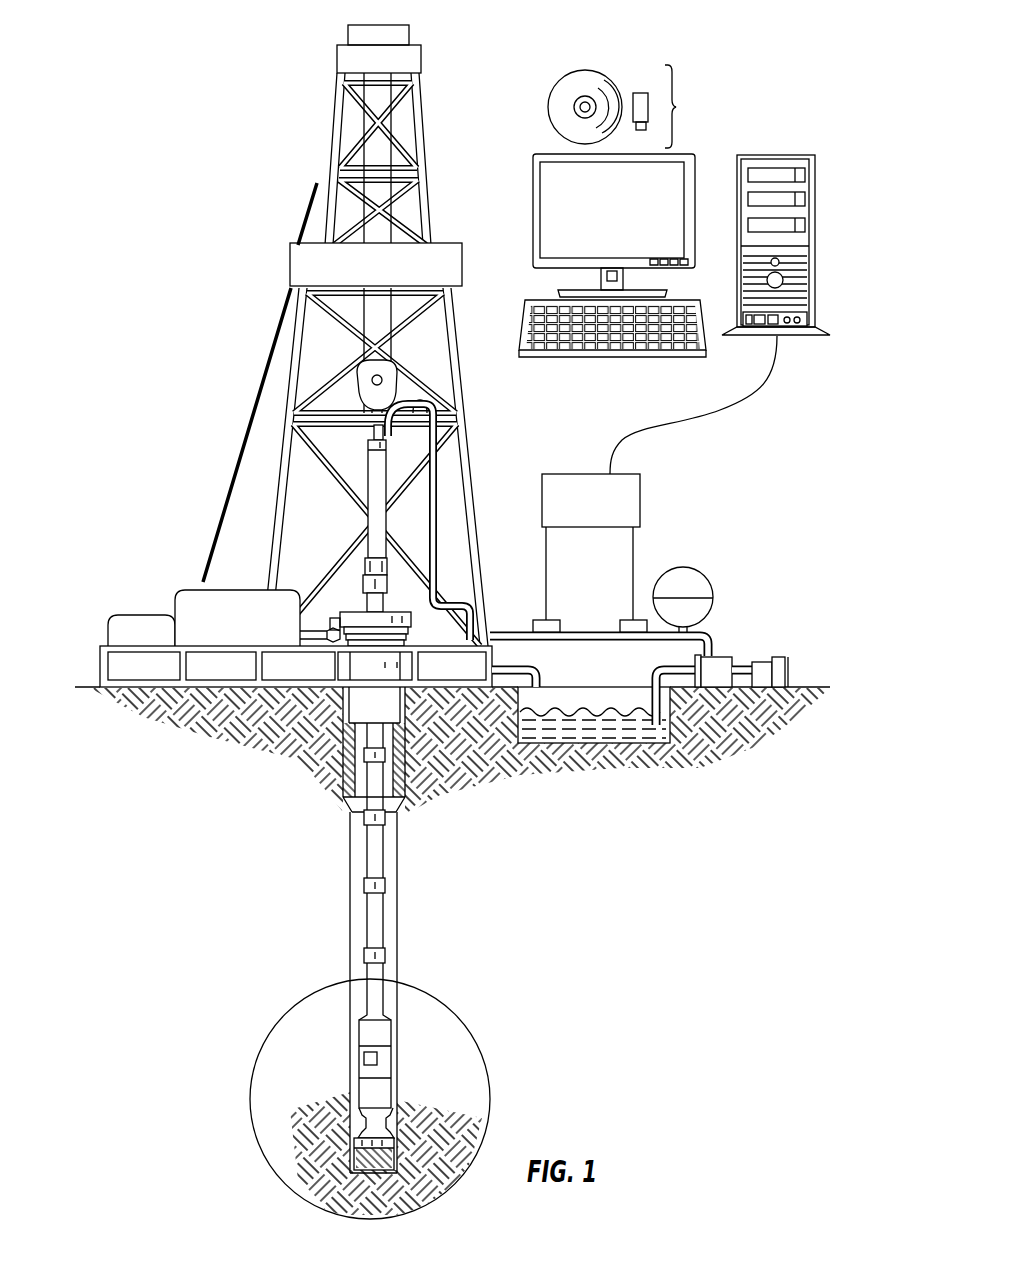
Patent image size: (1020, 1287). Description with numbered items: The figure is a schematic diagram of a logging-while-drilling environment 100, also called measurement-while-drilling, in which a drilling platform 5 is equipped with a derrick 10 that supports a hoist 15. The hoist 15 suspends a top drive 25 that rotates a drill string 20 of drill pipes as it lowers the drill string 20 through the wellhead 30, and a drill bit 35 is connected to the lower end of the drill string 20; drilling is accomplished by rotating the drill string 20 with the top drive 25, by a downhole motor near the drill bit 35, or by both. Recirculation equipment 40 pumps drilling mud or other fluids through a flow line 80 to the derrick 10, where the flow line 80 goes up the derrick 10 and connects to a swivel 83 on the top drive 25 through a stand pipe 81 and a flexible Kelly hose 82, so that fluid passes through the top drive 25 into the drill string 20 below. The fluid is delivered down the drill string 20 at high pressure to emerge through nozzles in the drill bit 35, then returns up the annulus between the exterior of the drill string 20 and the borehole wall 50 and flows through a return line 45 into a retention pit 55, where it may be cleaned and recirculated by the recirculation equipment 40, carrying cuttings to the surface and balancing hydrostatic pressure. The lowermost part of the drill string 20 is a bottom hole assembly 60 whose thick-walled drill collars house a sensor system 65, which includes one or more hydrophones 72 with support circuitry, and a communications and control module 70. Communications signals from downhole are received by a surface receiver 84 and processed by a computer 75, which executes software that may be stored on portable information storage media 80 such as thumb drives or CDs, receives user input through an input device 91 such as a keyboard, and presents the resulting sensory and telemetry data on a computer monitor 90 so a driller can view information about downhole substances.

The drilling platform 5 is at (100, 665).
The derrick 10 is at (428, 158).
The hoist 15 is at (356, 385).
The drill string 20 is at (381, 851).
The top drive 25 is at (372, 482).
The wellhead 30 is at (352, 614).
The drill bit 35 is at (395, 1143).
The recirculation equipment 40 is at (763, 657).
The return line 45 is at (572, 684).
The borehole wall 50 is at (398, 870).
The retention pit 55 is at (606, 716).
The bottom hole assembly 60 is at (470, 1027).
The sensor system 65 is at (357, 1067).
The communications and control module 70 is at (367, 1030).
The hydrophone 72 is at (380, 1059).
The computer 75 is at (815, 244).
The flow line / portable information storage media 80 is at (591, 632).
The stand pipe 81 is at (437, 523).
The flexible Kelly hose 82 is at (410, 452).
The swivel 83 is at (374, 428).
The surface receiver 84 is at (640, 492).
The computer monitor 90 is at (627, 224).
The input device 91 is at (612, 358).
The logging-while-drilling environment 100 is at (702, 950).